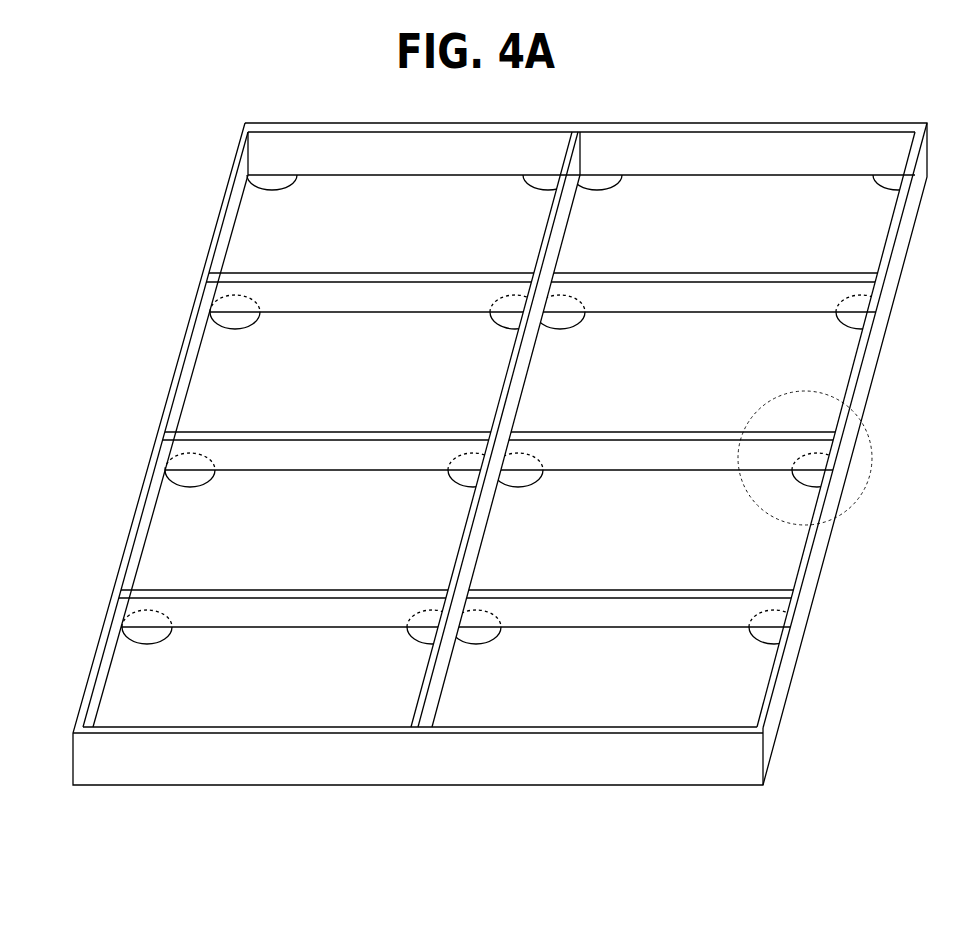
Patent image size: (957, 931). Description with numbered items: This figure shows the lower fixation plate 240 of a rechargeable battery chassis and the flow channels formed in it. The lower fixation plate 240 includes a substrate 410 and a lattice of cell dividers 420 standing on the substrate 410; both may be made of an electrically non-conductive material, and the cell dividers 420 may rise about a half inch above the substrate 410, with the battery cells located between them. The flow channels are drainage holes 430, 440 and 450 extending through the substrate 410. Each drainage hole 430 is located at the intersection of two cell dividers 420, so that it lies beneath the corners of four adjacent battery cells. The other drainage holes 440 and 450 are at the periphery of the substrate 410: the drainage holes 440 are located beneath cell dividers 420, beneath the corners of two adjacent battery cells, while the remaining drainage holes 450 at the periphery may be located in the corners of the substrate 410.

The lower fixation plate 240 is at (802, 690).
The substrate 410 is at (617, 684).
The cell dividers 420 is at (770, 122).
The drainage holes 430 is at (589, 329).
The drainage holes 440 is at (438, 269).
The drainage holes 450 is at (297, 202).